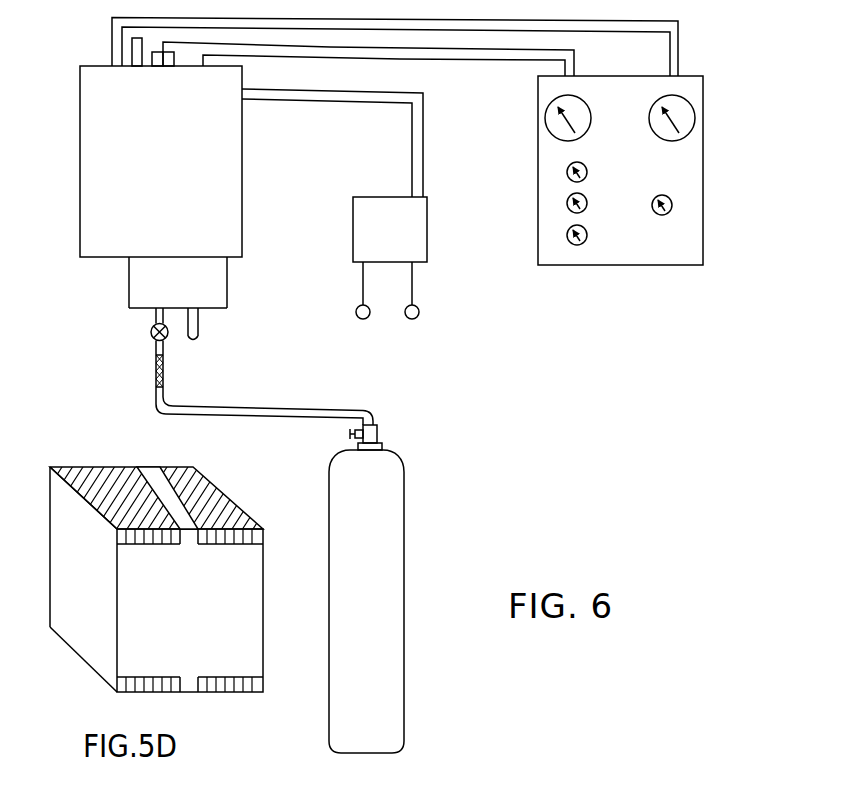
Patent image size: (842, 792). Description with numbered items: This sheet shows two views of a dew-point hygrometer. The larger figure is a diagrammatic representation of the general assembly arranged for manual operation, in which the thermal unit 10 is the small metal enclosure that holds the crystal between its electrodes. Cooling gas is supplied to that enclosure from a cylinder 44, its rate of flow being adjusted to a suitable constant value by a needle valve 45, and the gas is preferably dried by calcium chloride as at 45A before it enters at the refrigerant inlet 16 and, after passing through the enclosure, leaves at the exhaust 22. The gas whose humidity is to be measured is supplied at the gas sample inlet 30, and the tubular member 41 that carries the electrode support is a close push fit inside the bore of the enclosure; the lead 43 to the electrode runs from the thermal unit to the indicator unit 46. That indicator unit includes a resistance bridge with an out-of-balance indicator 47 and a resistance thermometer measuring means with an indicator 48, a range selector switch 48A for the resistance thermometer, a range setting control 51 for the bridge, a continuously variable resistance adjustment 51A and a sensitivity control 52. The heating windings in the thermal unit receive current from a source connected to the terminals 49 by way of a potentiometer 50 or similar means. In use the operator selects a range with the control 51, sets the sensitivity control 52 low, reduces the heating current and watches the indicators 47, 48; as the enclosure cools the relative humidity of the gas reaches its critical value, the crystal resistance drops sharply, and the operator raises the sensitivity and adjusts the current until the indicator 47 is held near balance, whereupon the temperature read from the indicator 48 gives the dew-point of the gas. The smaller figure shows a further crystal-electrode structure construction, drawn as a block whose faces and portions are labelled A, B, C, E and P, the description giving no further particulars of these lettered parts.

In FIG. 6, the thermal unit 10 is at (243, 163).
In FIG. 6, the refrigerant gas inlet 16 is at (154, 319).
In FIG. 6, the refrigerant exhaust 22 is at (200, 331).
In FIG. 6, the gas sample inlet 30 is at (130, 47).
In FIG. 6, the tubular member 41 is at (174, 58).
In FIG. 6, the lead to the electrode 43 is at (294, 47).
In FIG. 6, the cylinder 44 is at (405, 464).
In FIG. 6, the needle valve 45 is at (151, 341).
In FIG. 6, the calcium chloride drier 45A is at (166, 379).
In FIG. 6, the indicator unit 46 is at (603, 266).
In FIG. 6, the out-of-balance indicator 47 is at (588, 131).
In FIG. 6, the resistance thermometer indicator 48 is at (661, 98).
In FIG. 6, the range selector switch 48A is at (664, 216).
In FIG. 6, the terminals 49 is at (409, 319).
In FIG. 6, the potentiometer 50 is at (428, 229).
In FIG. 6, the range setting control 51 is at (588, 170).
In FIG. 6, the continuously variable resistance adjustment 51A is at (588, 203).
In FIG. 6, the sensitivity control 52 is at (588, 235).
In FIG. 5D, the front face A is at (189, 605).
In FIG. 5D, the side face B is at (82, 591).
In FIG. 5D, the strip C is at (100, 482).
In FIG. 5D, the edge E is at (82, 500).
In FIG. 5D, the hatched portion P is at (188, 503).